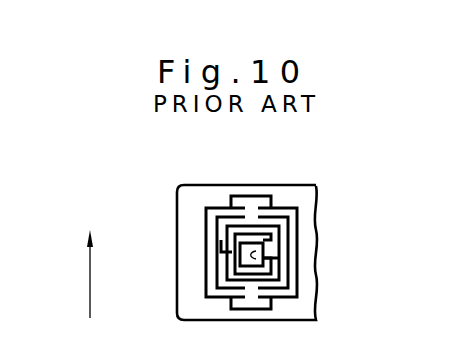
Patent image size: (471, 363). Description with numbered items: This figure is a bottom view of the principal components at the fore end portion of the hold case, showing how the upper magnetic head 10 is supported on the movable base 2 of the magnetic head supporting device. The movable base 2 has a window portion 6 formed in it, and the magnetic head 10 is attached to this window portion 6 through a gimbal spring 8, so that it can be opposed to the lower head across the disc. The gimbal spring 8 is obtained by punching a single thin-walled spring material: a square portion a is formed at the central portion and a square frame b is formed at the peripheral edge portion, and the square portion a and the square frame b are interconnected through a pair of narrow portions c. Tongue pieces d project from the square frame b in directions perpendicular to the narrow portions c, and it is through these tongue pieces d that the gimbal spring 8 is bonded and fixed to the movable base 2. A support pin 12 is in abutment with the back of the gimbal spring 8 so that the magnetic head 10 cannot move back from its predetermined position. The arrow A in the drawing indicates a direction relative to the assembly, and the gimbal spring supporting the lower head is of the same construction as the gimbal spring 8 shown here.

The movable base 2 is at (308, 322).
The window portion 6 is at (207, 299).
The gimbal spring 8 is at (285, 291).
The square frame b is at (222, 291).
The tongue pieces d is at (250, 311).
The magnetic head 10 is at (241, 243).
The support pin 12 is at (265, 244).
The square portion a is at (286, 258).
The narrow portions c is at (226, 244).
The direction arrow A is at (88, 277).